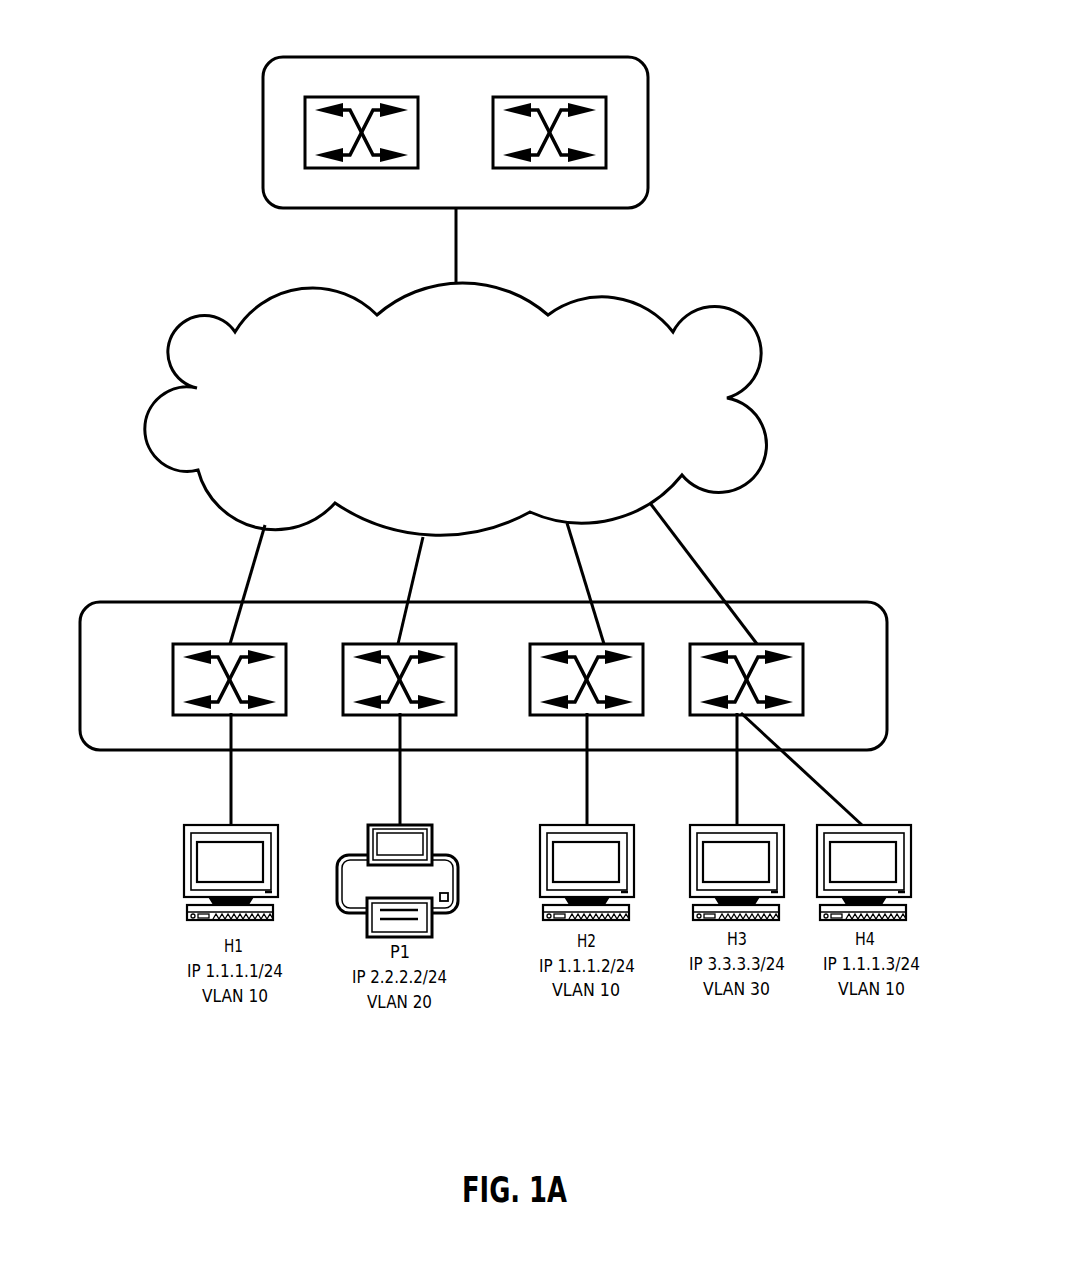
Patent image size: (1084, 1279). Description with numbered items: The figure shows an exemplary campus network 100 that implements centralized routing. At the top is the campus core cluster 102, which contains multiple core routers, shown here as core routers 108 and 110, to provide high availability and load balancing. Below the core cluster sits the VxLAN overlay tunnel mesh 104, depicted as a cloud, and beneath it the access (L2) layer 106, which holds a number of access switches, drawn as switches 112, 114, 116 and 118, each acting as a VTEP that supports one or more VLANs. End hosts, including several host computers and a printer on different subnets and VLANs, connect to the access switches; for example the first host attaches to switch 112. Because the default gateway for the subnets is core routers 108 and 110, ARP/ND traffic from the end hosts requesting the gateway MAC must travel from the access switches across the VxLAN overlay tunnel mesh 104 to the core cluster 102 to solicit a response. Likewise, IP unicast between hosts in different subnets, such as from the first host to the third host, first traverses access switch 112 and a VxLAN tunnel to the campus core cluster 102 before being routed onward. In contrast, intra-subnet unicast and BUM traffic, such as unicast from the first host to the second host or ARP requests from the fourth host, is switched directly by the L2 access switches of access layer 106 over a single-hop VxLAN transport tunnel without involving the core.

The campus network 100 is at (520, 1127).
The campus core cluster 102 is at (496, 151).
The VxLAN overlay tunnel mesh 104 is at (470, 432).
The access (L2) layer 106 is at (803, 602).
The core router 108 is at (357, 98).
The core router 110 is at (543, 98).
The access switch 112 is at (177, 685).
The access switch 114 is at (347, 675).
The access switch 116 is at (533, 675).
The access switch 118 is at (690, 683).